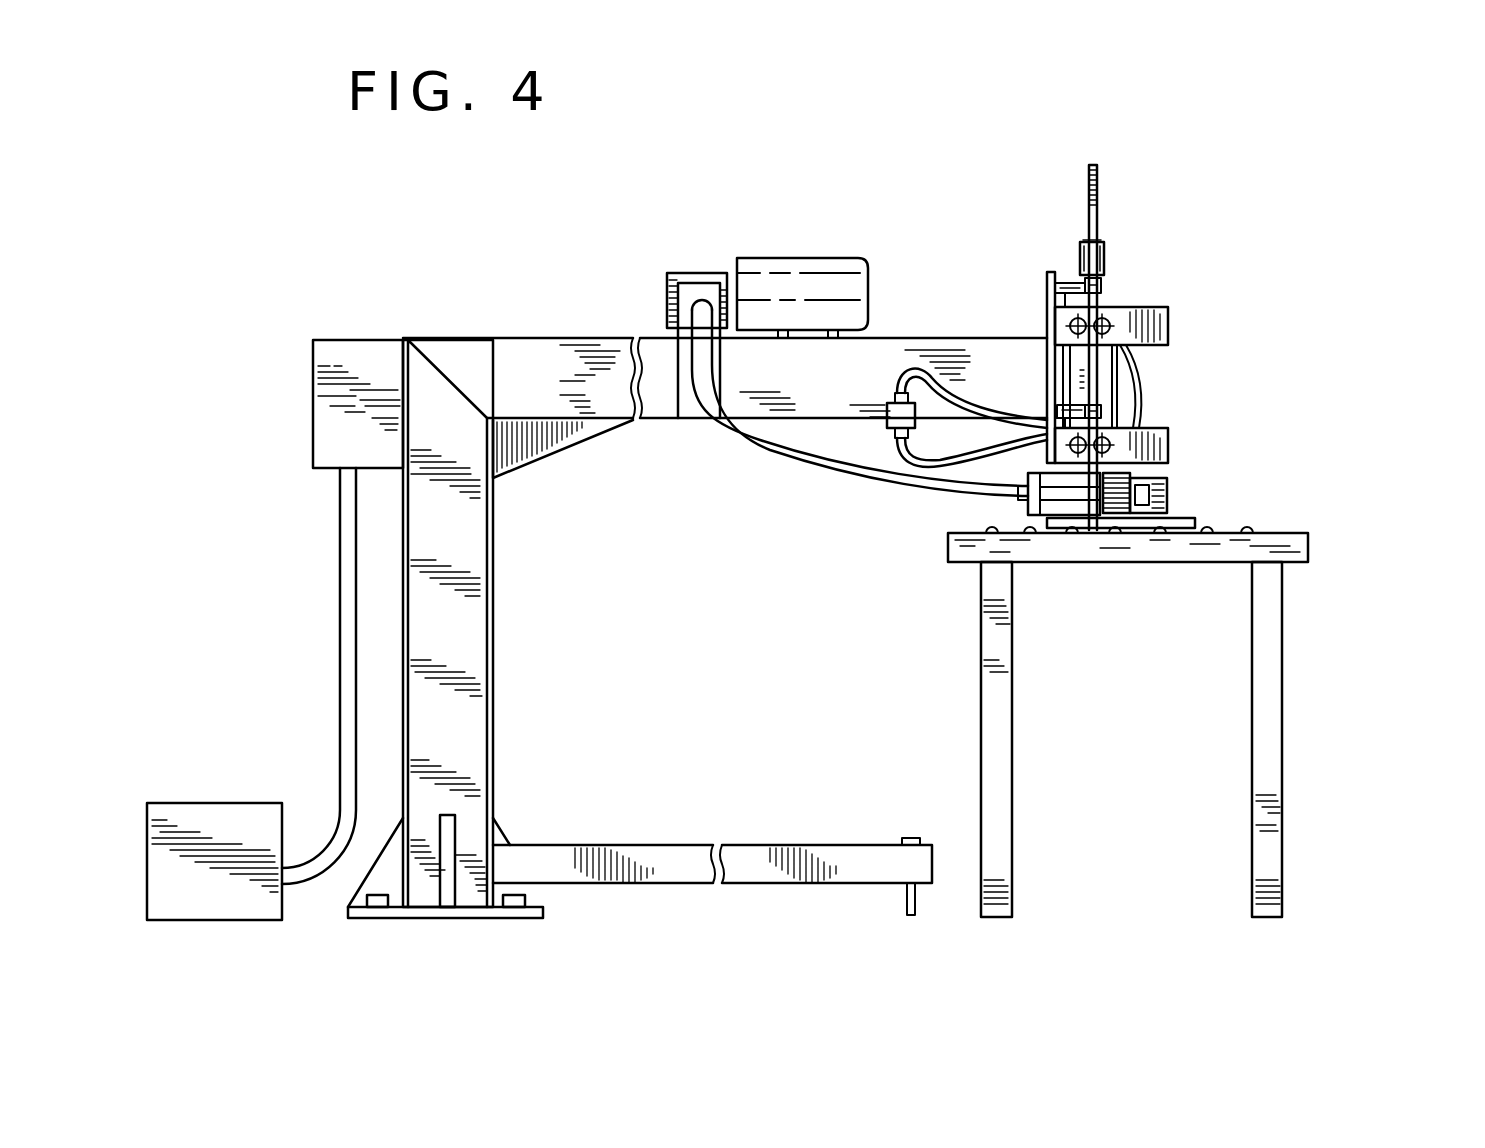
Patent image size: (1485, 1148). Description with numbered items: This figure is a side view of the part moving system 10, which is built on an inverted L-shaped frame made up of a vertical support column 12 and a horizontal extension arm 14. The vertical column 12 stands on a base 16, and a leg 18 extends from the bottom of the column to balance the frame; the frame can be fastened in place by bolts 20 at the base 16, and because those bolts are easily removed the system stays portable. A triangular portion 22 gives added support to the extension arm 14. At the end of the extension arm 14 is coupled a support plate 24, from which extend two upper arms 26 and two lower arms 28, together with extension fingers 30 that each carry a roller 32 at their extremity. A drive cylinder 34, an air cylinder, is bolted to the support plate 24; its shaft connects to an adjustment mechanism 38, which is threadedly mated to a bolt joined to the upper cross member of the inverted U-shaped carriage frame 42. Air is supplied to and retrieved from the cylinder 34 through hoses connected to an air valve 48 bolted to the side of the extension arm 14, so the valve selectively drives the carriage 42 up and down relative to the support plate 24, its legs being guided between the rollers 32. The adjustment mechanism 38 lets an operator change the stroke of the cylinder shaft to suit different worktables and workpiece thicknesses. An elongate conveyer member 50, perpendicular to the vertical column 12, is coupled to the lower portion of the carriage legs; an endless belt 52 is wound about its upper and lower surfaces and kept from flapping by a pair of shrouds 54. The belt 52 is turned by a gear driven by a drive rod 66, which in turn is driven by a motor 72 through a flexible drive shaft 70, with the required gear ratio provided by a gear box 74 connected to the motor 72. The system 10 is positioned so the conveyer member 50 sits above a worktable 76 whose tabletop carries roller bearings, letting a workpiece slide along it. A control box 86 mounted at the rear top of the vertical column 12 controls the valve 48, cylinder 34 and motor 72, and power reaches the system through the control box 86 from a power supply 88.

The part moving system 10 is at (533, 250).
The vertical support column 12 is at (495, 580).
The horizontal extension arm 14 is at (665, 420).
The base 16 is at (348, 910).
The leg 18 is at (795, 845).
The bolts 20 is at (543, 912).
The triangular portion 22 is at (572, 462).
The support plate 24 is at (1045, 300).
The upper arms 26 is at (1168, 320).
The lower arms 28 is at (1168, 445).
The extension fingers 30 is at (1066, 280).
The roller 32 is at (1103, 285).
The drive cylinder 34 is at (1115, 365).
The adjustment mechanism 38 is at (1105, 256).
The inverted U-shaped carriage frame 42 is at (1098, 178).
The air valve 48 is at (886, 412).
The elongate conveyer member 50 is at (1183, 497).
The endless belt 52 is at (1122, 528).
The shrouds 54 is at (1168, 485).
The drive rod 66 is at (1058, 516).
The flexible drive shaft 70 is at (847, 483).
The motor 72 is at (820, 258).
The gear box 74 is at (685, 272).
The worktable 76 is at (1308, 548).
The control box 86 is at (312, 415).
The power supply 88 is at (210, 803).